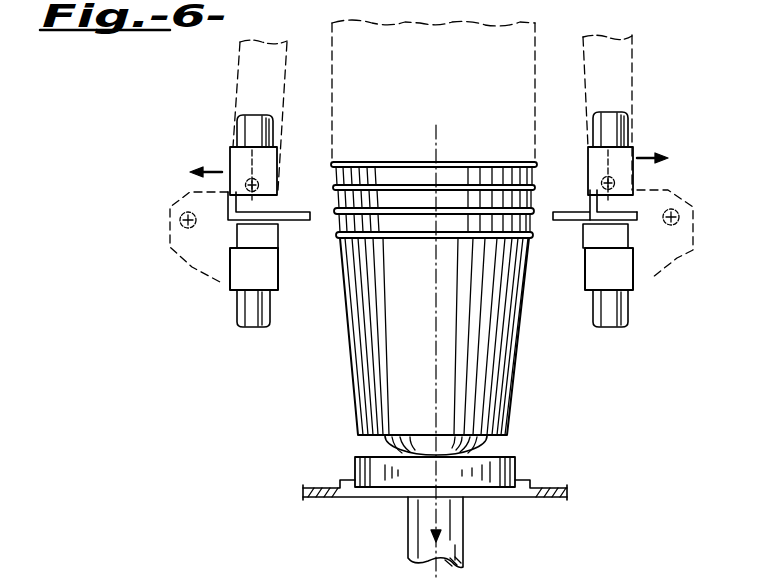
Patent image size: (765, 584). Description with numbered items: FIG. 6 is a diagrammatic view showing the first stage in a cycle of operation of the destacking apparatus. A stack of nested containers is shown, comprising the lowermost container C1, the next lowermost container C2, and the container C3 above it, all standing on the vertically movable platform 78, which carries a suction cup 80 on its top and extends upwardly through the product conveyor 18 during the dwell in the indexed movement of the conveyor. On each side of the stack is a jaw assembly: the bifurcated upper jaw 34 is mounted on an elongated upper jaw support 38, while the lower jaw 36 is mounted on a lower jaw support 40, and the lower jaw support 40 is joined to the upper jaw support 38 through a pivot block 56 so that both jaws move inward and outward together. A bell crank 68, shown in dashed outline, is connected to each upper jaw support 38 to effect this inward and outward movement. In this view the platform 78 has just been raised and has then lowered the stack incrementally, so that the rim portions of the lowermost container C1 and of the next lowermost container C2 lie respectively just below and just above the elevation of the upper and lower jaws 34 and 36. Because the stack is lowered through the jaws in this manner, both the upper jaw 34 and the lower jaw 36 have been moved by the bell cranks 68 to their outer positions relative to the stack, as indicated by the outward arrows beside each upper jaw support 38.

The product conveyor 18 is at (566, 484).
The upper jaw 34 is at (284, 190).
The lower jaw 36 is at (280, 226).
The upper jaw support 38 is at (238, 167).
The lower jaw support 40 is at (240, 274).
The pivot block 56 is at (192, 268).
The bell crank 68 is at (242, 73).
The vertically movable platform 78 is at (517, 466).
The suction cup 80 is at (477, 443).
The lowermost container C1 is at (367, 315).
The next lowermost container C2 is at (334, 218).
The next lowermost container after C2 C3 is at (382, 180).